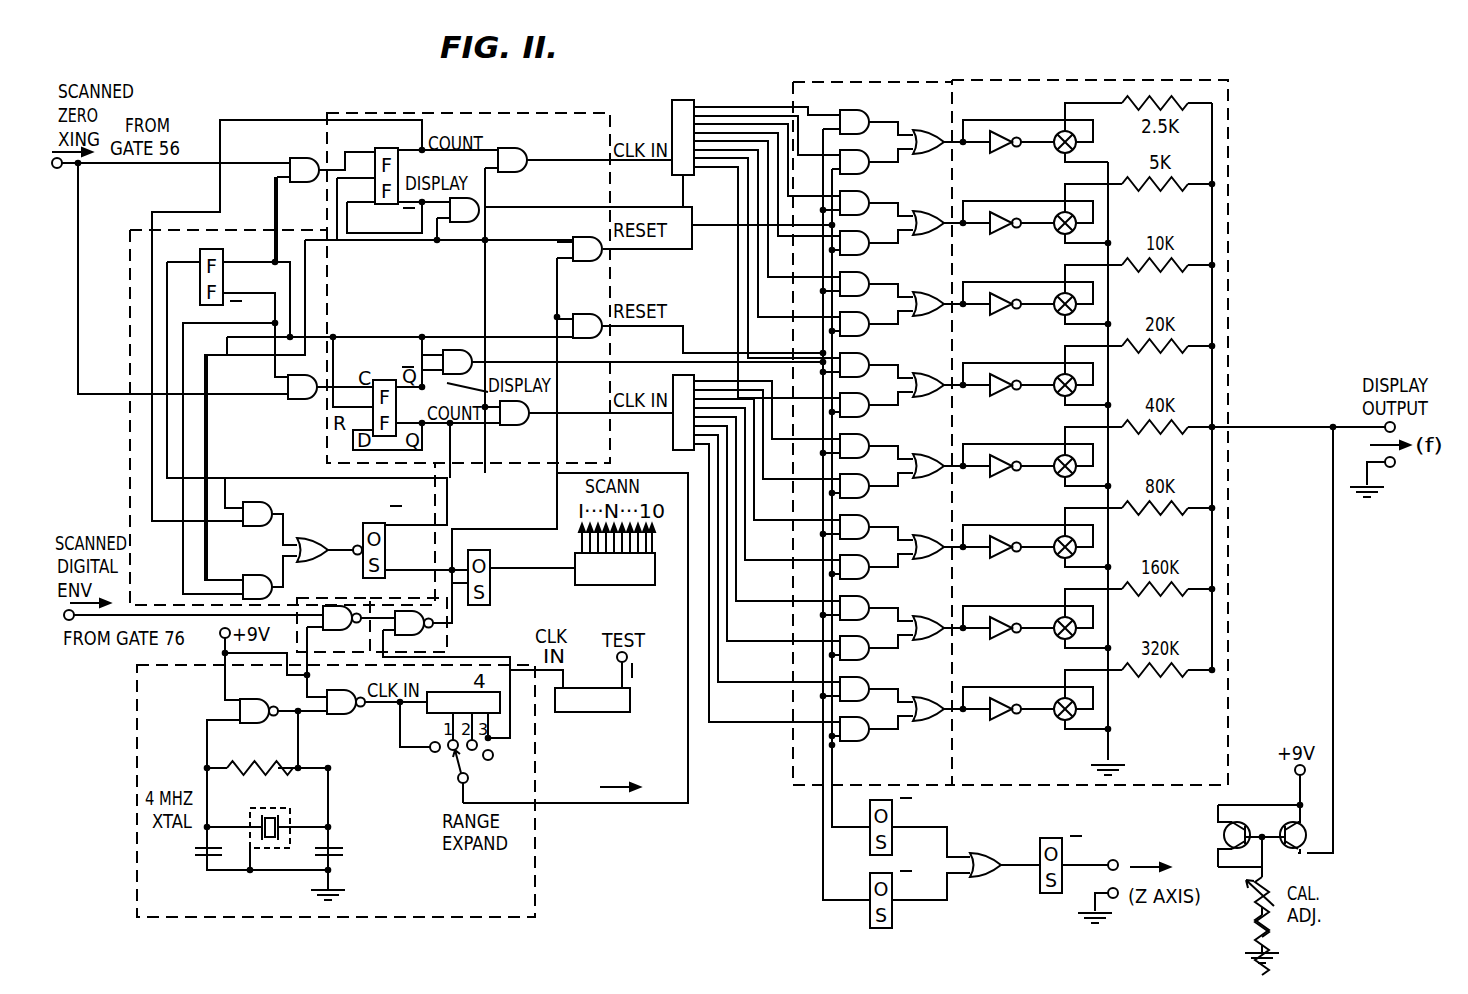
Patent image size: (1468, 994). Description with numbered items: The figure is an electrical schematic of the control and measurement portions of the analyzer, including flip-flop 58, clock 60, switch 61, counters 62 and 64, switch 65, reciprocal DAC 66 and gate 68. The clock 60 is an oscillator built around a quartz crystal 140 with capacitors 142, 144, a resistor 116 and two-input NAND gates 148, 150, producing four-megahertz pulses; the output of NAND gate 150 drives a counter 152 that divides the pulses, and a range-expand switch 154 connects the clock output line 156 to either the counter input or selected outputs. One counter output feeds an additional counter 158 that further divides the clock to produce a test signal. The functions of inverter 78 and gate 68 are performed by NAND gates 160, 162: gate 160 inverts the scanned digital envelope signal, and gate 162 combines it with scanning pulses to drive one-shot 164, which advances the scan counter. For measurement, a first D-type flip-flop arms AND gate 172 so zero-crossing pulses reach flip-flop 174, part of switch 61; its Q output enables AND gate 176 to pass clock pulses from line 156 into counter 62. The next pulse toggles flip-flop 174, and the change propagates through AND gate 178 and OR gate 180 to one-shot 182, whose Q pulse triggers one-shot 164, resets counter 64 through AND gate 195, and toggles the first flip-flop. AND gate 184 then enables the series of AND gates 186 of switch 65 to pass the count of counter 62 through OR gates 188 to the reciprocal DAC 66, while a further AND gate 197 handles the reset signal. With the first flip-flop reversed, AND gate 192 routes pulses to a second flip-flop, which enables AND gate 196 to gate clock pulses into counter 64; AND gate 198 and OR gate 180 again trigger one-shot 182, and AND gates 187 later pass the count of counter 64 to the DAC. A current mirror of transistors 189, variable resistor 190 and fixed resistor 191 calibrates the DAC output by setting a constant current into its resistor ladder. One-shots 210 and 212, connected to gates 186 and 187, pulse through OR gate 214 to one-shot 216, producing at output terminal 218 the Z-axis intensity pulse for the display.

The flip-flop 58 is at (138, 204).
The clock 60 is at (438, 918).
The switch 61 is at (573, 113).
The counter 62 is at (671, 113).
The counter 64 is at (673, 372).
The switch 65 is at (792, 92).
The reciprocal DAC 66 is at (995, 80).
The gate 68 is at (448, 650).
The inverter 78 is at (312, 597).
The feedback resistor 116 is at (256, 766).
The quartz crystal 140 is at (273, 807).
The capacitor 142 is at (203, 857).
The capacitor 144 is at (346, 851).
The two-input NAND gate 148 is at (263, 700).
The two-input NAND gate 150 is at (346, 716).
The counter 152 is at (435, 742).
The switch 154 is at (468, 781).
The output line 156 is at (590, 805).
The counter device 158 is at (590, 713).
The two-input NAND gate 160 is at (337, 606).
The two-input NAND gate 162 is at (417, 610).
The one-shot device 164 is at (491, 590).
The two-input AND gate 172 is at (288, 170).
The flip-flop 174 is at (390, 148).
The AND gate 176 is at (522, 155).
The two-input AND gate 178 is at (272, 508).
The OR gate 180 is at (1348, 422).
The one-shot 182 is at (384, 522).
The two-input AND gate 184 is at (479, 215).
The AND gates 186 is at (868, 161).
The AND gates 187 is at (870, 119).
The OR gates 188 is at (930, 156).
The transistors 189 is at (1287, 817).
The variable resistor 190 is at (1258, 902).
The fixed resistor 191 is at (1255, 930).
The AND gate 192 is at (288, 385).
The AND gate 195 is at (594, 313).
The two-input AND gate 196 is at (513, 426).
The AND gate 197 is at (573, 249).
The two-input AND gate 198 is at (250, 575).
The one-shot device 210 is at (894, 838).
The one-shot device 212 is at (870, 882).
The OR gate 214 is at (991, 880).
The one-shot device 216 is at (1040, 845).
The output terminal 218 is at (1116, 858).